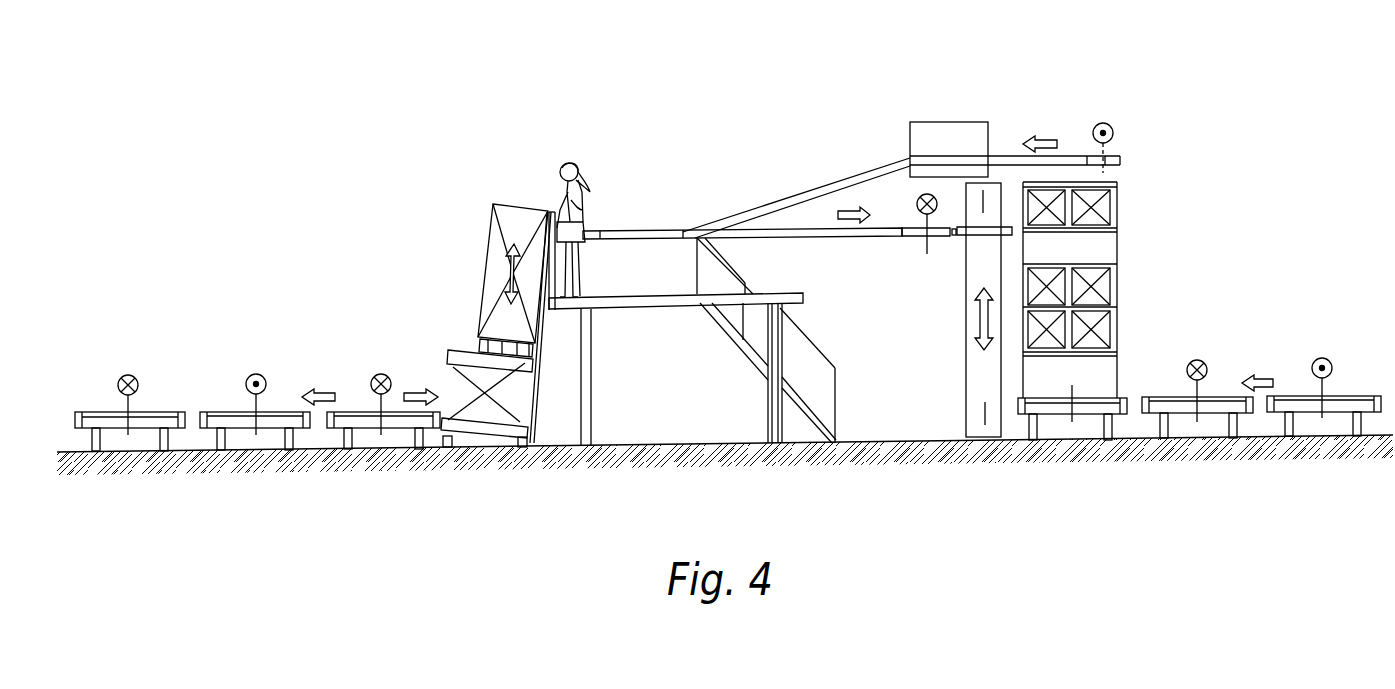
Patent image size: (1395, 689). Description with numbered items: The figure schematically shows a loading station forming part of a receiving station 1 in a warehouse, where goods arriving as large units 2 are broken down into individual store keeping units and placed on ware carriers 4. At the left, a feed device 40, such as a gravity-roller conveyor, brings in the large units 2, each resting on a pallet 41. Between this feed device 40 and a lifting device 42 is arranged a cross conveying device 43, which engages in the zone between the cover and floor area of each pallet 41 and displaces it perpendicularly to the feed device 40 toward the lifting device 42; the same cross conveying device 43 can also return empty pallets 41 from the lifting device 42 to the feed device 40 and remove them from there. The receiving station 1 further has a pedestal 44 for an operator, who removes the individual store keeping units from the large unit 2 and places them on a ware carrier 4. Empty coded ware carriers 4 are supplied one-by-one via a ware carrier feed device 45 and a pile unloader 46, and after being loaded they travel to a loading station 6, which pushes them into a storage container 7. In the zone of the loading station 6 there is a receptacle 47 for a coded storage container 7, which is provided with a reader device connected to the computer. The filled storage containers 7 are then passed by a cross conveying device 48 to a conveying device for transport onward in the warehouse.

The receiving station 1 is at (506, 158).
The large unit 2 is at (490, 228).
The ware carrier 4 is at (632, 231).
The loading station 6 is at (970, 357).
The storage container 7 is at (1128, 233).
The feed device 40 is at (110, 413).
The pallet 41 is at (472, 346).
The lifting device 42 is at (497, 410).
The cross conveying device 43 is at (312, 380).
The pedestal 44 is at (632, 309).
The ware carrier feed device 45 is at (1115, 155).
The pile unloader 46 is at (938, 130).
The receptacle 47 is at (1030, 440).
The cross conveying device 48 is at (1262, 364).